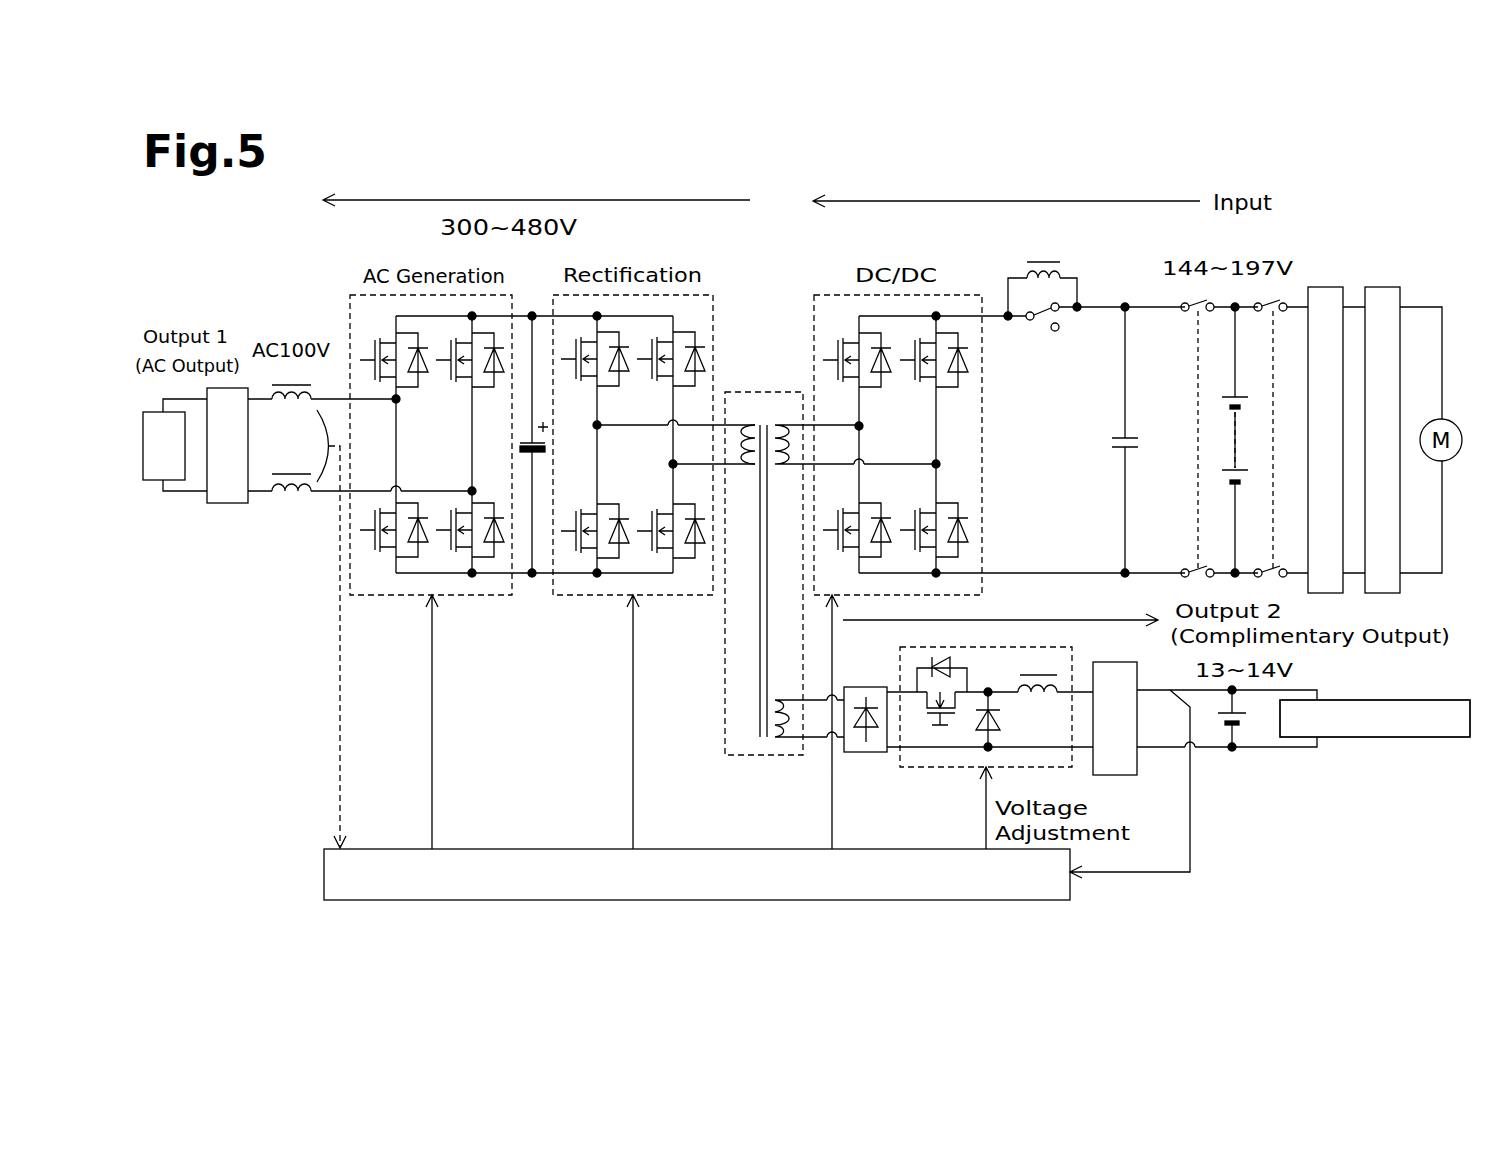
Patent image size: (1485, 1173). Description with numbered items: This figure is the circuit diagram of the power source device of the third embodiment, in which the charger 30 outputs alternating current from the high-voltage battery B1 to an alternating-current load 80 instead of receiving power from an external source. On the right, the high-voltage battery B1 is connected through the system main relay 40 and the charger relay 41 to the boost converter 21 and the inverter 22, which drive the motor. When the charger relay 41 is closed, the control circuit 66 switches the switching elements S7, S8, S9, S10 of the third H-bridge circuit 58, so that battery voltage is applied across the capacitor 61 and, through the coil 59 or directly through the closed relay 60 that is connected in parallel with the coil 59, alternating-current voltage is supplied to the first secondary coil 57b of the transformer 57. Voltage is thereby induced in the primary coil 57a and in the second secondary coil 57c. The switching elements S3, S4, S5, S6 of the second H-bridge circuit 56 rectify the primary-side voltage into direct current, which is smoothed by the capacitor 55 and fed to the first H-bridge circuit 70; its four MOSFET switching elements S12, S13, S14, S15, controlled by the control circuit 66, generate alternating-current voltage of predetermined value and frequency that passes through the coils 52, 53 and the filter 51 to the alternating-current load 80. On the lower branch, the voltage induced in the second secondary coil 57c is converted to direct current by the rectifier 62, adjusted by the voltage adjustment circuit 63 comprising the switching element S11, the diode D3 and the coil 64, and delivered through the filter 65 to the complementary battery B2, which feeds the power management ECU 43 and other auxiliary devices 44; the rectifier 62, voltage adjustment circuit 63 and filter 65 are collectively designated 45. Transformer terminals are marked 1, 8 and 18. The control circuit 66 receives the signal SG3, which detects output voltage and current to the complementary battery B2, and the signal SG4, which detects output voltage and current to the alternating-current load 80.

The charger 30 is at (1103, 176).
The first H-bridge circuit 70 is at (511, 448).
The second H-bridge circuit 56 is at (654, 426).
The transformer 57 is at (830, 568).
The primary coil 57a is at (745, 468).
The first secondary coil 57b is at (785, 468).
The second secondary coil 57c is at (787, 740).
The third H-bridge circuit 58 is at (969, 424).
The coil 59 is at (1060, 268).
The relay 60 is at (1043, 330).
The capacitor 61 is at (1122, 440).
The rectifier 62 is at (869, 754).
The voltage adjustment circuit 63 is at (990, 732).
The coil 64 is at (1030, 697).
The filter 65 is at (1125, 776).
The control circuit 66 is at (1002, 901).
The alternating-current load 80 is at (155, 482).
The filter 51 is at (229, 504).
The coil 52 is at (292, 410).
The coil 53 is at (292, 500).
The capacitor 55 is at (525, 440).
The charger relay 41 is at (1198, 305).
The system main relay 40 is at (1270, 305).
The boost converter 21 is at (1328, 287).
The inverter 22 is at (1385, 287).
The rectifier, voltage adjustment circuit and filter 45 is at (1216, 791).
The power management ECU 43 is at (1328, 700).
The auxiliary devices 44 is at (1375, 704).
The high-voltage battery B1 is at (1240, 397).
The complementary battery B2 is at (1250, 715).
The diode D3 is at (1000, 718).
The switching element S3 is at (591, 389).
The switching element S4 is at (576, 499).
The switching element S5 is at (667, 389).
The switching element S6 is at (651, 499).
The switching element S7 is at (852, 389).
The switching element S8 is at (841, 499).
The switching element S9 is at (929, 389).
The switching element S10 is at (914, 499).
The switching element S11 is at (988, 682).
The switching element S12 is at (417, 400).
The switching element S13 is at (394, 572).
The switching element S14 is at (456, 394).
The switching element S15 is at (495, 571).
The terminal 1 is at (788, 686).
The terminal 8 is at (788, 410).
The terminal 18 is at (739, 410).
The signal SG3 is at (1122, 895).
The signal SG4 is at (317, 629).